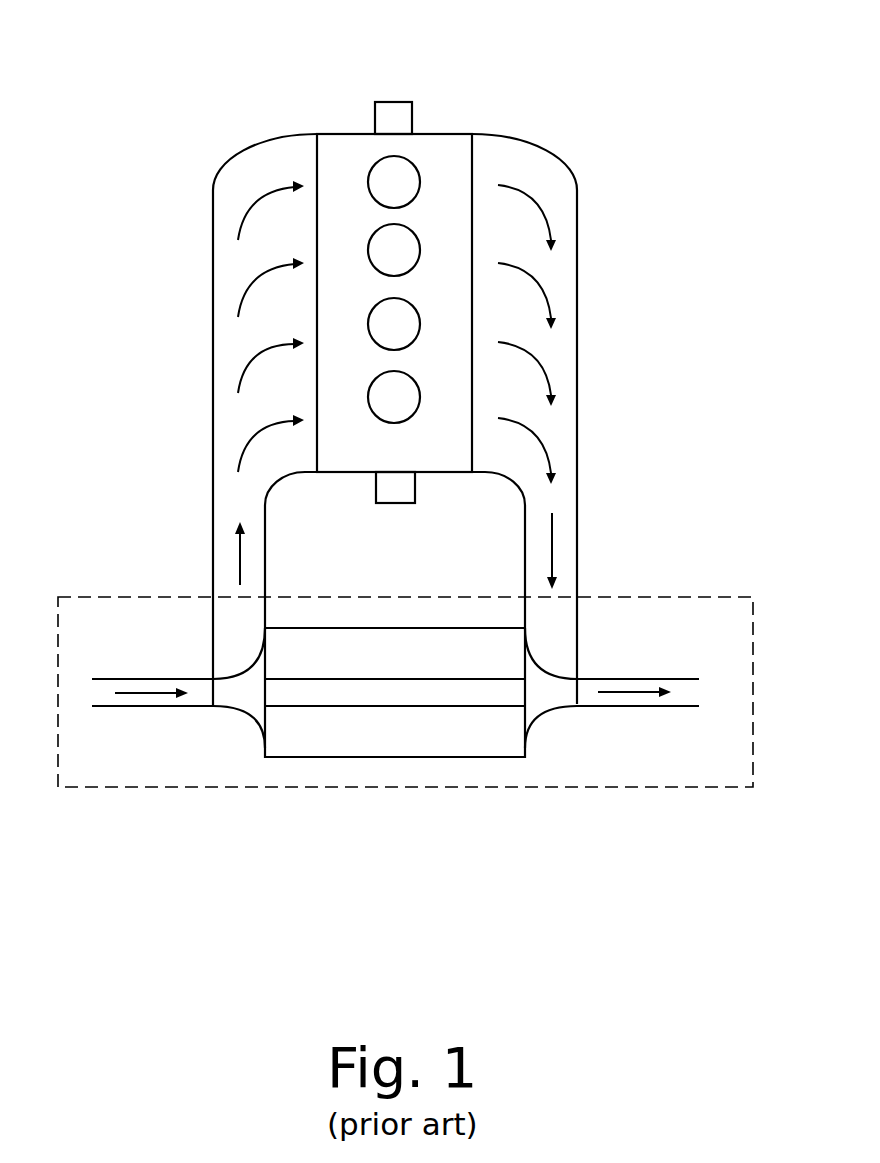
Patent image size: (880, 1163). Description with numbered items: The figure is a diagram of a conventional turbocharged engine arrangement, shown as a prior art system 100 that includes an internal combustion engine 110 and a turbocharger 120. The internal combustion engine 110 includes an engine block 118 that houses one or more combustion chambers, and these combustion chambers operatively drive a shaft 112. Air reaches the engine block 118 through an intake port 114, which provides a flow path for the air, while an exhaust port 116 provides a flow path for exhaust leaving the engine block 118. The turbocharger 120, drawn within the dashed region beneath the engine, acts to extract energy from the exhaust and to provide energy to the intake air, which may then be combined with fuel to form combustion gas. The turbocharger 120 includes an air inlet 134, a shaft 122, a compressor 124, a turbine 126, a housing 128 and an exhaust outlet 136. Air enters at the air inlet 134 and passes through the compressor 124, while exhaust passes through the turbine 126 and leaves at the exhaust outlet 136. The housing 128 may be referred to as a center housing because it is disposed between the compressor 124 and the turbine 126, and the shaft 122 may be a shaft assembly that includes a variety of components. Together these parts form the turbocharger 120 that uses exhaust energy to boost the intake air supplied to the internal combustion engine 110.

The prior art system 100 is at (571, 50).
The internal combustion engine 110 is at (355, 133).
The shaft 112 is at (395, 101).
The intake port 114 is at (236, 156).
The exhaust port 116 is at (573, 168).
The engine block 118 is at (416, 464).
The turbocharger 120 is at (640, 596).
The shaft 122 is at (393, 708).
The compressor 124 is at (247, 717).
The turbine 126 is at (550, 713).
The housing 128 is at (418, 666).
The air inlet 134 is at (173, 678).
The exhaust outlet 136 is at (642, 678).